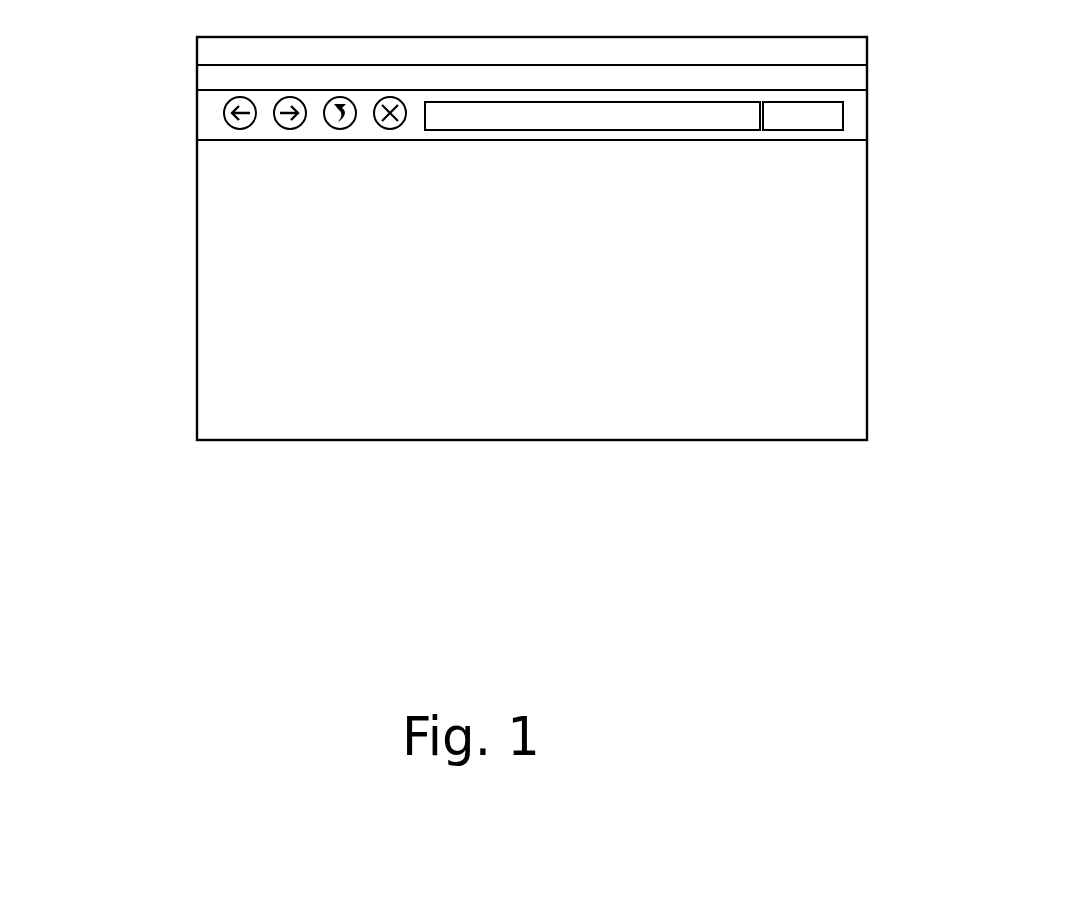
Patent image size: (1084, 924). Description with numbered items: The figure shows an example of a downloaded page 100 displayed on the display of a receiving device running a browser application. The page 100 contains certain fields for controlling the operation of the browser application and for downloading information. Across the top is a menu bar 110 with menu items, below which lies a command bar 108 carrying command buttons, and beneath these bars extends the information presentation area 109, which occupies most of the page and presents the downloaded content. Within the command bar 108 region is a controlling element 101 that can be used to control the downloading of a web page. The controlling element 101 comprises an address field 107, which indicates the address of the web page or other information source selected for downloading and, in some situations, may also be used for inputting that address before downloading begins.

The page 100 is at (358, 443).
The controlling element 101 is at (856, 117).
The address field 107 is at (582, 132).
The command bar 108 is at (190, 126).
The information presentation area 109 is at (213, 337).
The menu bar 110 is at (192, 82).